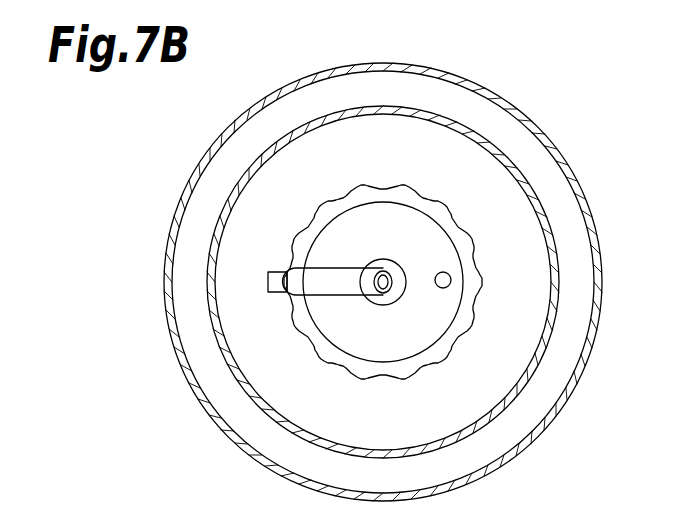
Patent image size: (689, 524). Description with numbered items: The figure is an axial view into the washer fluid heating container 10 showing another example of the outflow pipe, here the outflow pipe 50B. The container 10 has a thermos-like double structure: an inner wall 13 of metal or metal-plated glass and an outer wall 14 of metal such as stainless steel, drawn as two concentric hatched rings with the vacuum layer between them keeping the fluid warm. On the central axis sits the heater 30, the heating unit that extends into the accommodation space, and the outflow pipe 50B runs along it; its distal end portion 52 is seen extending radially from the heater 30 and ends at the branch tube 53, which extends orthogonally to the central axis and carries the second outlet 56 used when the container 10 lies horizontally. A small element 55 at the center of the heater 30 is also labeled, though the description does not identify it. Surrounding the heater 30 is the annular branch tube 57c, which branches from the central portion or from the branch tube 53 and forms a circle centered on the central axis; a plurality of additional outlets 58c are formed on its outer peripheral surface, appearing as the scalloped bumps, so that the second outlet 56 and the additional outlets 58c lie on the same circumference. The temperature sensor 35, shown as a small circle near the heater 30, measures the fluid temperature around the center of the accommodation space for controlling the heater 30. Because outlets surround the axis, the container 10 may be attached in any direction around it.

The container 10 is at (413, 269).
The inner wall 13 is at (560, 279).
The outer wall 14 is at (596, 218).
The heater 30 is at (388, 259).
The temperature sensor 35 is at (451, 284).
The outflow pipe 50B is at (360, 306).
The distal end portion 52 is at (343, 270).
The branch tube 53 is at (283, 271).
The shaft bore 55 is at (385, 282).
The second outlet 56 is at (283, 288).
The branch tube 57c is at (367, 374).
The additional outlets 58c is at (398, 187).